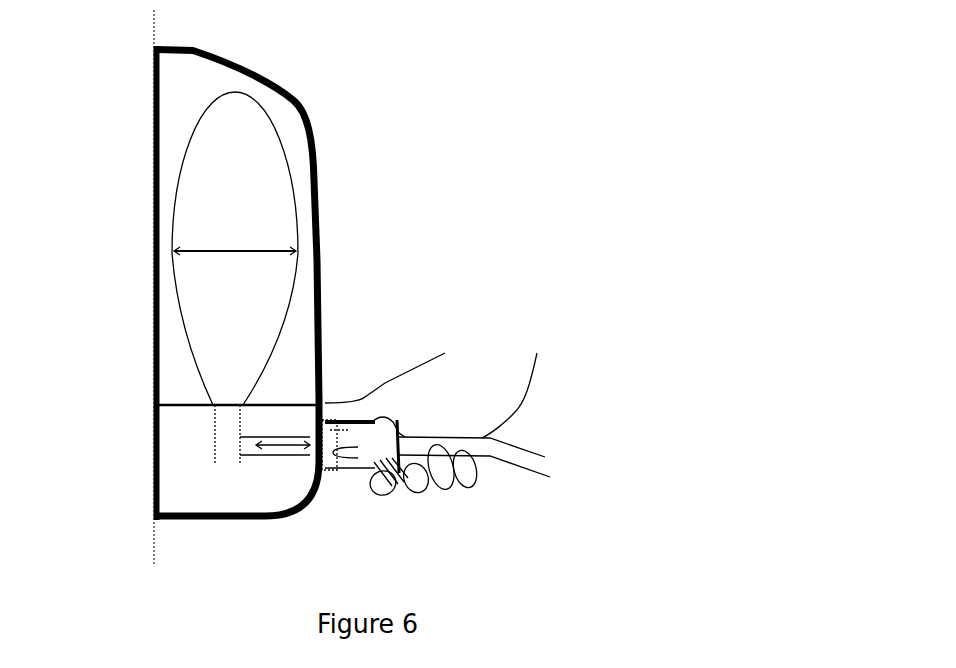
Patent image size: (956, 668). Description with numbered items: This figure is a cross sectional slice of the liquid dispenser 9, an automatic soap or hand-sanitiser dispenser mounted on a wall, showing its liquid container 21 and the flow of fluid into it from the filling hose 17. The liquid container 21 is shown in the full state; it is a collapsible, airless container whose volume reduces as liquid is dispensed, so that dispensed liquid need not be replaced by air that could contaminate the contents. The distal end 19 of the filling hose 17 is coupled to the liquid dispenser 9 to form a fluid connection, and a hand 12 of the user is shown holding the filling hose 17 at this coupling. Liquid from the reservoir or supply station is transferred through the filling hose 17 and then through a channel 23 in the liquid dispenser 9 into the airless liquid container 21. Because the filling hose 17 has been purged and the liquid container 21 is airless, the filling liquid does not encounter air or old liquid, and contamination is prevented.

The liquid dispenser 9 is at (300, 108).
The liquid container 21 is at (160, 177).
The channel 23 is at (273, 433).
The distal end 19 is at (342, 472).
The filling hose 17 is at (545, 457).
The hand 12 is at (450, 490).